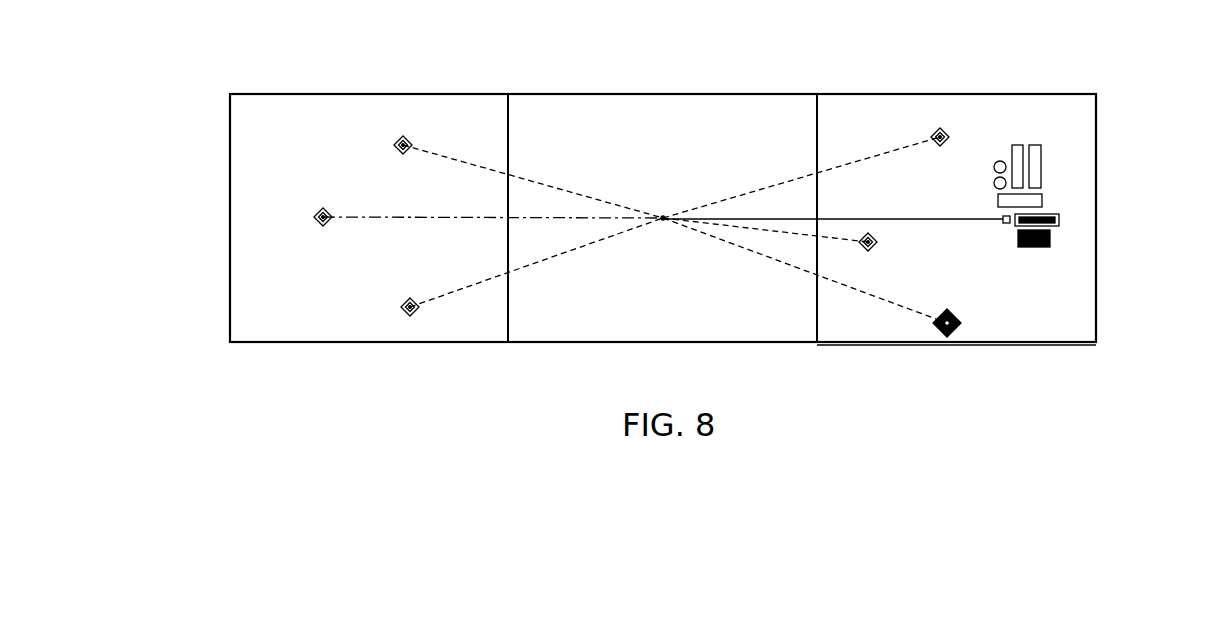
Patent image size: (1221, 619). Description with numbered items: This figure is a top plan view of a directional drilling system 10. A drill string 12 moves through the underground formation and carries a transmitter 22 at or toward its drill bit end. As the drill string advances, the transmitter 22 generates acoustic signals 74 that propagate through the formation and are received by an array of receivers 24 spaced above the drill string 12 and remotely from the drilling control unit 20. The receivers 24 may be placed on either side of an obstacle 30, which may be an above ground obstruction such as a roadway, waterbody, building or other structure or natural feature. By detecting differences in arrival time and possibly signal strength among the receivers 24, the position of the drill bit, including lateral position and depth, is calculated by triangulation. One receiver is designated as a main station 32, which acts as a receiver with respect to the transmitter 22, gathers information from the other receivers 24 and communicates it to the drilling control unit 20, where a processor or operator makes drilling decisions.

The system 10 is at (966, 378).
The drill string 12 is at (753, 223).
The drilling control unit 20 is at (1058, 215).
The transmitter 22 is at (663, 220).
The receivers 24 is at (413, 296).
The obstacle 30 is at (533, 303).
The main station 32 is at (961, 323).
The signals 74 is at (547, 185).